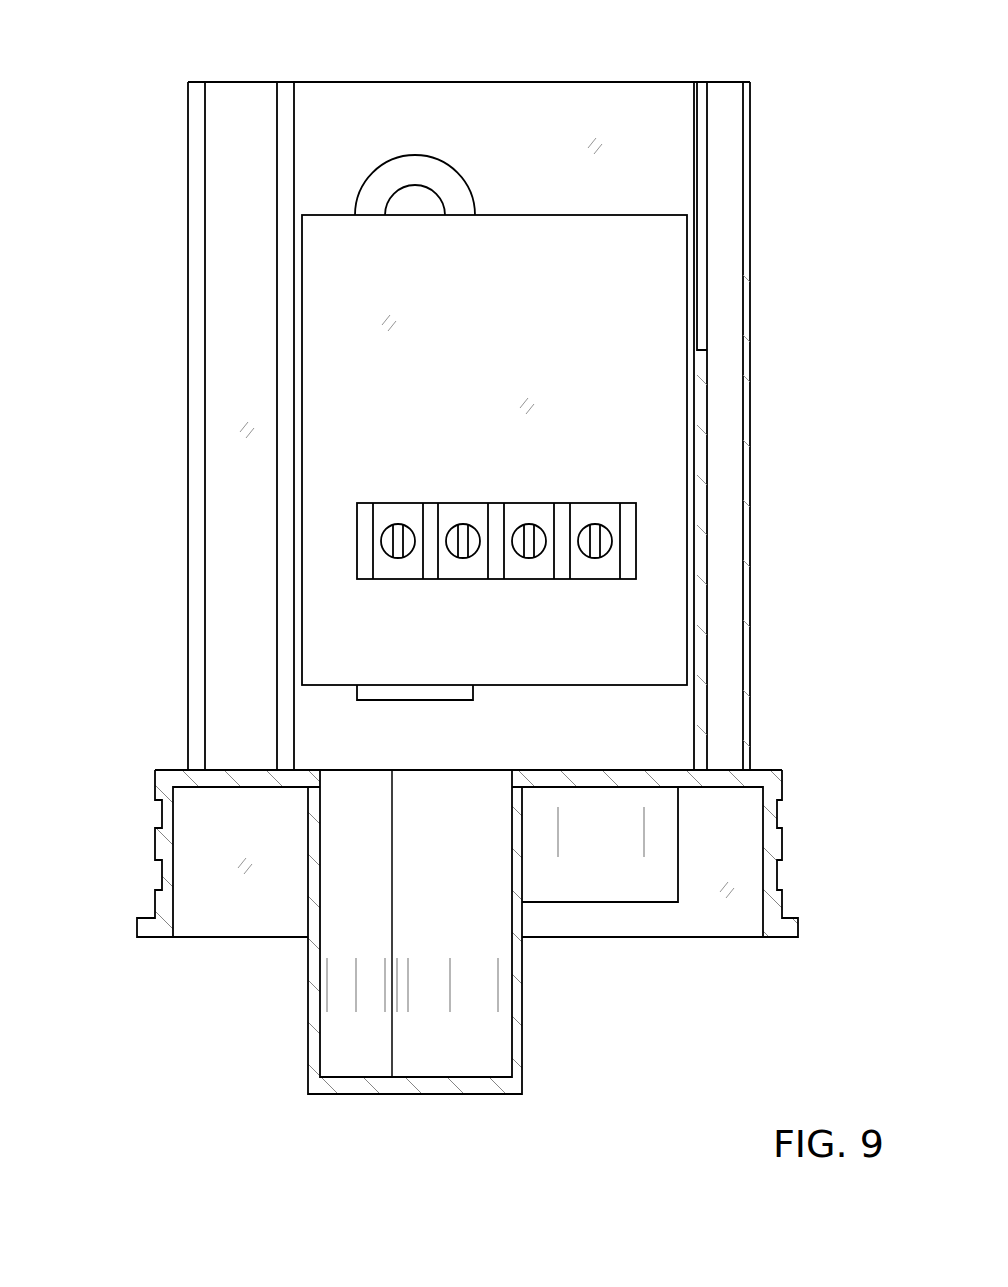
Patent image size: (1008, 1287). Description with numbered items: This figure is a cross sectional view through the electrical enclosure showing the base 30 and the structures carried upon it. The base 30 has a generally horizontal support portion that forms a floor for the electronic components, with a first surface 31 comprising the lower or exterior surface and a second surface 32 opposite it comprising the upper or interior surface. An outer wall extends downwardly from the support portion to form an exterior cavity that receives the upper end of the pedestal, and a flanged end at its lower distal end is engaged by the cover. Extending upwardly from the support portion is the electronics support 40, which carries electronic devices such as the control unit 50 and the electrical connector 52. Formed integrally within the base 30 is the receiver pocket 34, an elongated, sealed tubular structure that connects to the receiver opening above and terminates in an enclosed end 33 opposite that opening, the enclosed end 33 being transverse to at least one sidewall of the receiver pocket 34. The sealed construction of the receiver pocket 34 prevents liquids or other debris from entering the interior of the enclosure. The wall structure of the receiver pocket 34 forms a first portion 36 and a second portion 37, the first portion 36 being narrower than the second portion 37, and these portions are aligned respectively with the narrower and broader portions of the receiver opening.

The base 30 is at (410, 930).
The first surface 31 is at (210, 787).
The second surface 32 is at (243, 770).
The enclosed end 33 is at (382, 1095).
The receiver pocket 34 is at (437, 967).
The first portion 36 is at (333, 1033).
The second portion 37 is at (473, 1052).
The electronics support 40 is at (495, 128).
The control unit 50 is at (590, 310).
The electrical connector 52 is at (597, 502).